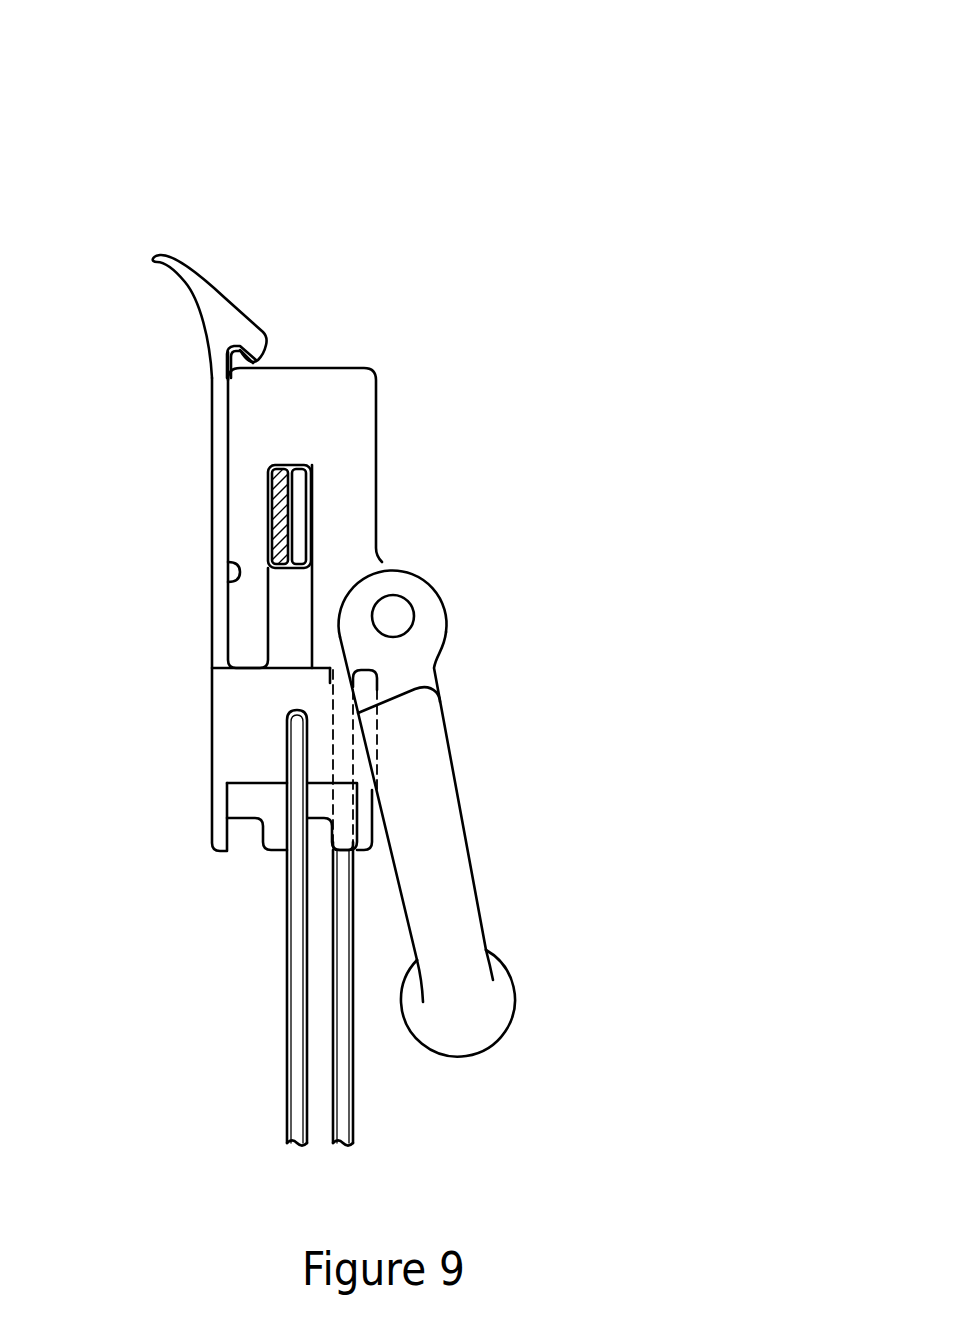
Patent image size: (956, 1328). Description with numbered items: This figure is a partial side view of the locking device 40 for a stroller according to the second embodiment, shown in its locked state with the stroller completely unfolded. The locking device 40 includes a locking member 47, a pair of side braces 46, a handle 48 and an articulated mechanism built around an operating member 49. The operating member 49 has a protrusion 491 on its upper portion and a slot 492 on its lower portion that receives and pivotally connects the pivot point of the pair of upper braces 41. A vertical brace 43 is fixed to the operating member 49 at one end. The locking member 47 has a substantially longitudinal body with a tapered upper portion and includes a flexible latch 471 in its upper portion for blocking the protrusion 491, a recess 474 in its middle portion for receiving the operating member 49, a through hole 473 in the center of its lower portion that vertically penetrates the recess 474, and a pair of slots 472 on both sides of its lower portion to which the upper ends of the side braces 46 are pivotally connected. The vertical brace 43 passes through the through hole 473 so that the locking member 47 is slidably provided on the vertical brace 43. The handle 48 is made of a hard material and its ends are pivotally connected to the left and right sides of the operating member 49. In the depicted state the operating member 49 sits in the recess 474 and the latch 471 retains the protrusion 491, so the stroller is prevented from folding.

The locking device 40 is at (532, 184).
The upper braces 41 is at (302, 494).
The vertical brace 43 is at (345, 1097).
The side braces 46 is at (293, 973).
The locking member 47 is at (210, 714).
The flexible latch 471 is at (218, 294).
The slots 472 is at (287, 733).
The through hole 473 is at (357, 757).
The recess 474 is at (223, 566).
The handle 48 is at (482, 1012).
The operating member 49 is at (378, 409).
The protrusion 491 is at (247, 368).
The slot 492 is at (308, 613).